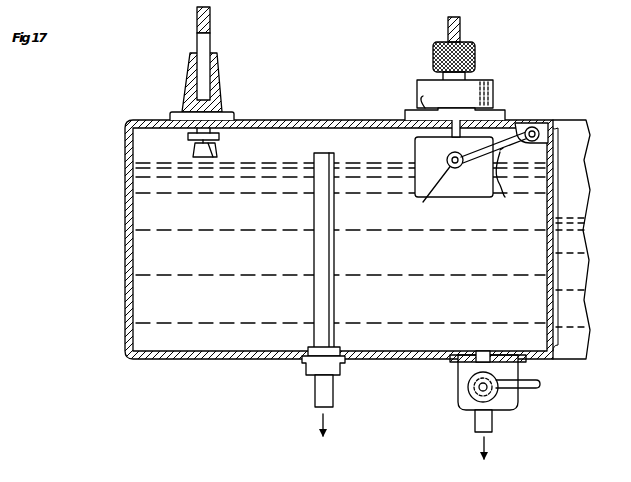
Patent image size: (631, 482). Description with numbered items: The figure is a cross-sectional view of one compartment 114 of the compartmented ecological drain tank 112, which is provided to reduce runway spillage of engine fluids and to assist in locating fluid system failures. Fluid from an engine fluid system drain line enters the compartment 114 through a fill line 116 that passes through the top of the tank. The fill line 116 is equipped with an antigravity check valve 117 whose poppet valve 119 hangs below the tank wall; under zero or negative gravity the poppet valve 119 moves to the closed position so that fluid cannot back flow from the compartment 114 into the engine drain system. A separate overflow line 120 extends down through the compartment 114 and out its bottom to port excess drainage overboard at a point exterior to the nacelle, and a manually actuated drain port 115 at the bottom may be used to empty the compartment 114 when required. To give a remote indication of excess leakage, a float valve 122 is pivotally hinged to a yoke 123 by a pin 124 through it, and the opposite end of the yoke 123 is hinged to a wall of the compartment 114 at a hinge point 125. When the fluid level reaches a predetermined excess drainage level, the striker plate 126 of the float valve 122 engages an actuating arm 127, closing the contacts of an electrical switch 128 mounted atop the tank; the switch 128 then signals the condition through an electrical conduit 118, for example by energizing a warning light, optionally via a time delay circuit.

The drain tank 112 is at (555, 99).
The compartment 114 is at (127, 245).
The drain port 115 is at (506, 402).
The fill line 116 is at (211, 27).
The antigravity check valve 117 is at (220, 140).
The poppet valve 119 is at (192, 150).
The electrical conduit 118 is at (461, 30).
The overflow line 120 is at (334, 392).
The float valve 122 is at (455, 196).
The yoke 123 is at (512, 179).
The pin 124 is at (426, 203).
The hinge point 125 is at (545, 122).
The striker plate 126 is at (452, 134).
The actuating arm 127 is at (430, 108).
The electrical switch 128 is at (494, 96).